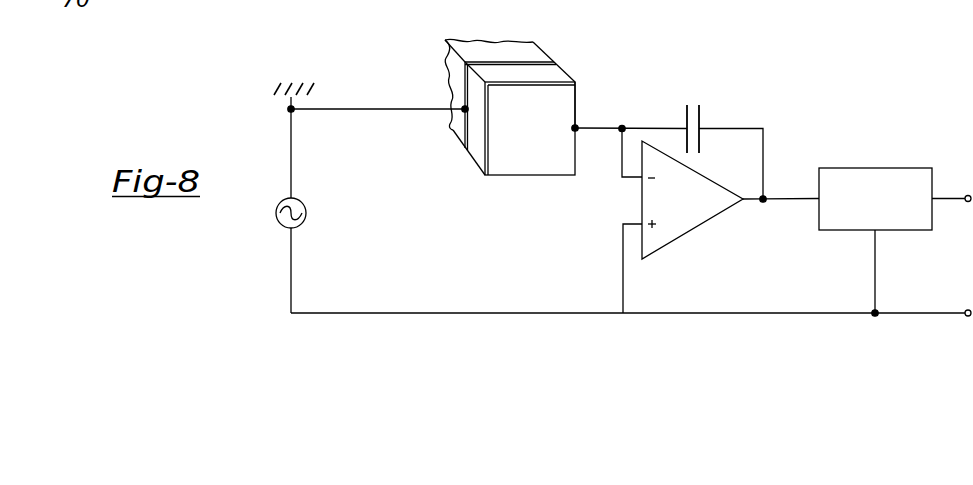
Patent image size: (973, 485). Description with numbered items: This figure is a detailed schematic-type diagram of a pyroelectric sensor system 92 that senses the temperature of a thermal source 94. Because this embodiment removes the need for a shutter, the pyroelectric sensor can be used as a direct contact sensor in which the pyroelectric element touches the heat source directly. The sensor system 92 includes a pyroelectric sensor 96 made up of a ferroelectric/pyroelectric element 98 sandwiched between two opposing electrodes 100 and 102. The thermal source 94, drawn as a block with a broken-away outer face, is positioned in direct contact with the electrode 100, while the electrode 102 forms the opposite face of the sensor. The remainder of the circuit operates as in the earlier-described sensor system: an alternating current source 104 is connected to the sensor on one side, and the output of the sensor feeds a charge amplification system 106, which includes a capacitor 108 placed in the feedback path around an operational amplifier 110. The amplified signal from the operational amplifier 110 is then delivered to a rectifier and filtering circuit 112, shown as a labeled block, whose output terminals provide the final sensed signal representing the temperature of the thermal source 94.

The pyroelectric sensor system 92 is at (738, 92).
The thermal source 94 is at (533, 52).
The pyroelectric sensor 96 is at (580, 76).
The ferroelectric/pyroelectric element 98 is at (475, 153).
The electrode 100 is at (467, 133).
The electrode 102 is at (535, 163).
The alternating current source 104 is at (303, 222).
The charge amplification system 106 is at (786, 118).
The capacitor 108 is at (686, 118).
The operational amplifier 110 is at (692, 232).
The rectifier and filtering circuit 112 is at (875, 168).